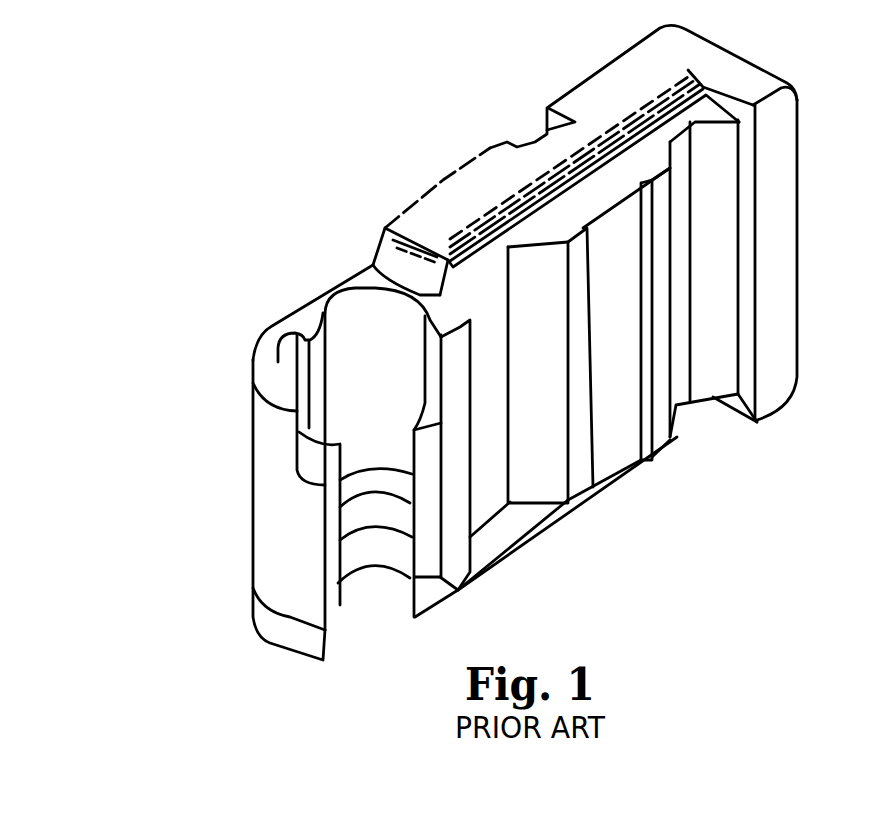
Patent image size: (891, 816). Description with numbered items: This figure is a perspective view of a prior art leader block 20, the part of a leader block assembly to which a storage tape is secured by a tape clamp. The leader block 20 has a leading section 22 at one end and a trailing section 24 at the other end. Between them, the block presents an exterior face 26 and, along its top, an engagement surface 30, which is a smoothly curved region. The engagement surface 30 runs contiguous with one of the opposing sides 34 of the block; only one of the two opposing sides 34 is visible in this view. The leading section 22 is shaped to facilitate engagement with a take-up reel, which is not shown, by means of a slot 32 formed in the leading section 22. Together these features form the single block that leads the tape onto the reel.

The leader block 20 is at (212, 422).
The leading section 22 is at (272, 544).
The trailing section 24 is at (791, 220).
The exterior face 26 is at (486, 463).
The engagement surface 30 is at (510, 210).
The slot 32 is at (375, 560).
The opposing side 34 is at (592, 106).